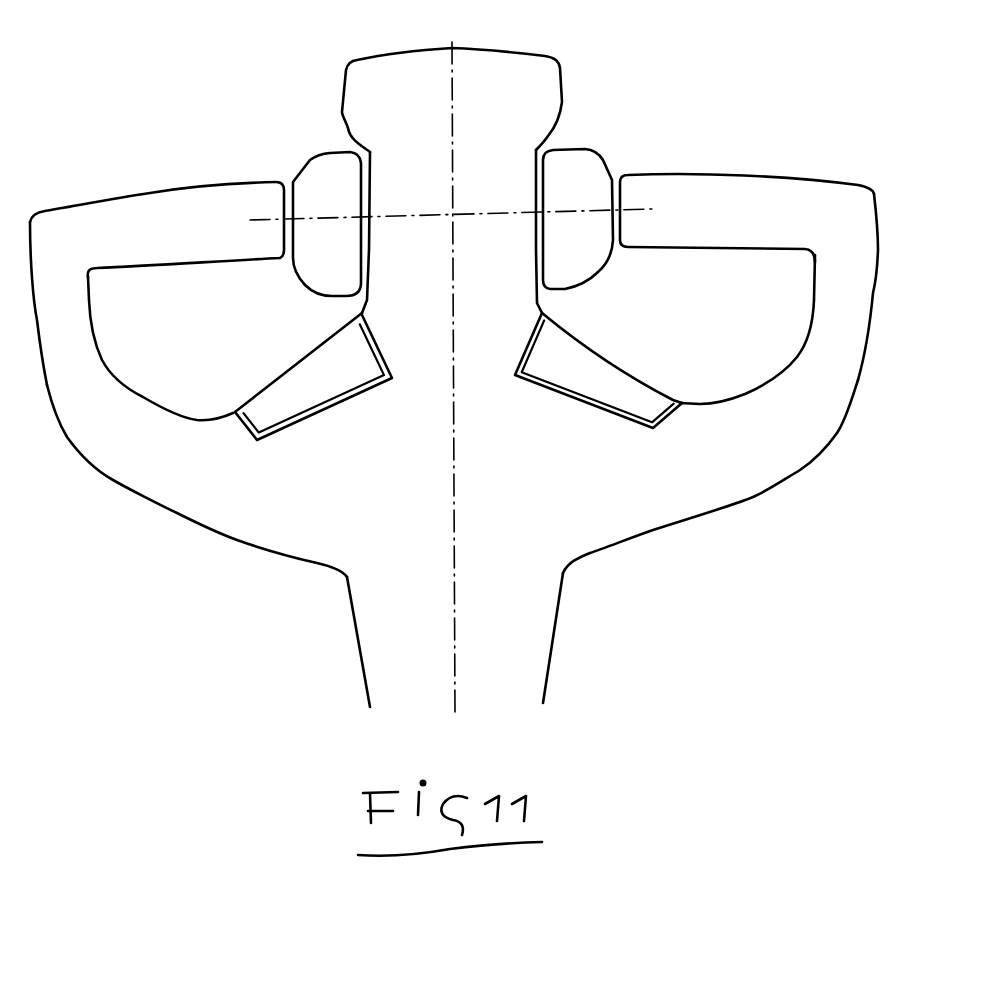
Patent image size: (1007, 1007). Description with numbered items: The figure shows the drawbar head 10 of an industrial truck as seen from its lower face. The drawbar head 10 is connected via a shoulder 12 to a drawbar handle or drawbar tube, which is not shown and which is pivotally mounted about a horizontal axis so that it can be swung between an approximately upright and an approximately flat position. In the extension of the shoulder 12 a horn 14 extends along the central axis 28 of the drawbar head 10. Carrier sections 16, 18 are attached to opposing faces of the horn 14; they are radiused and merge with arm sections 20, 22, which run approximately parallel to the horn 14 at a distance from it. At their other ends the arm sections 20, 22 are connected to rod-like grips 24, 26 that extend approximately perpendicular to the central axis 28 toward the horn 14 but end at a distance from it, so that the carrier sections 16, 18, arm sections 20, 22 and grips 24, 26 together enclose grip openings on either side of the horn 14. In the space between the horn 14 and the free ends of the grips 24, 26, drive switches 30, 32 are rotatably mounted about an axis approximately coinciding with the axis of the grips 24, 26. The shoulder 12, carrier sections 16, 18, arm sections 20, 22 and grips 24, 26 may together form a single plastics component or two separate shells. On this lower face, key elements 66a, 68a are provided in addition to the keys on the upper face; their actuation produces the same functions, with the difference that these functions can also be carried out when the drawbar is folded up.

The drawbar head 10 is at (656, 152).
The shoulder 12 is at (485, 683).
The horn 14 is at (482, 325).
The carrier section 16 is at (195, 488).
The carrier section 18 is at (758, 474).
The arm section 20 is at (100, 362).
The arm section 22 is at (862, 336).
The grip 24 is at (218, 237).
The grip 26 is at (752, 229).
The central axis 28 is at (455, 126).
The drive switch 30 is at (348, 212).
The drive switch 32 is at (600, 199).
The key element 66a is at (350, 399).
The key element 68a is at (575, 373).